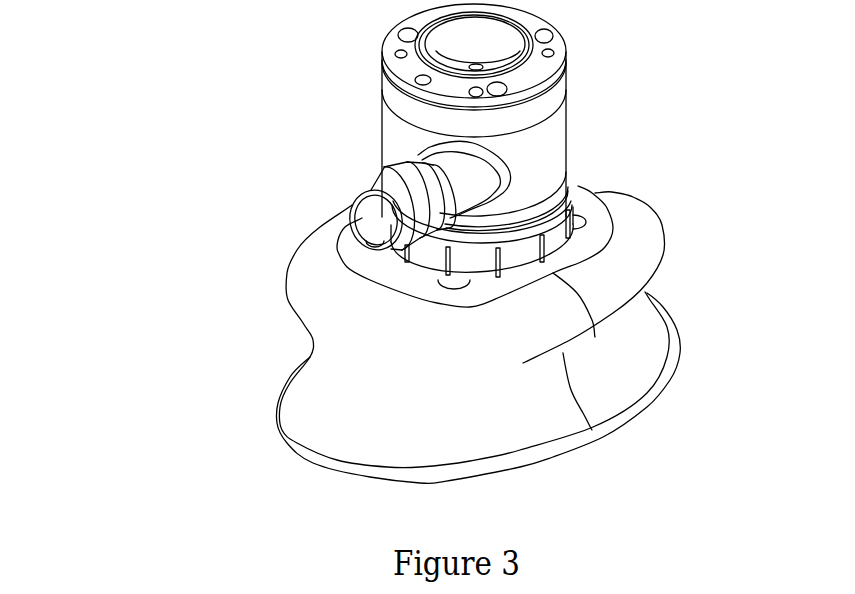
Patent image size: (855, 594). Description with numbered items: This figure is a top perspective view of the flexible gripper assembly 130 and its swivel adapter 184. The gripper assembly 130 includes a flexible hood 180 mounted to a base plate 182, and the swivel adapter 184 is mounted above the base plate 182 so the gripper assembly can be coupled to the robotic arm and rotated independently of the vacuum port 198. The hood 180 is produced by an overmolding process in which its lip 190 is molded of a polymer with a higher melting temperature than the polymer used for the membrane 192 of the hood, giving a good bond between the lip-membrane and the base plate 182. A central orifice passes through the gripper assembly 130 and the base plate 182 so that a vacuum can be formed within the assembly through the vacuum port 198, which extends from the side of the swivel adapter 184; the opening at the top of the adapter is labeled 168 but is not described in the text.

The gripping assembly 130 is at (147, 190).
The port opening 168 is at (477, 37).
The flexible hood 180 is at (683, 270).
The base plate 182 is at (598, 209).
The swivel adapter 184 is at (377, 128).
The lip 190 is at (640, 210).
The membrane 192 is at (357, 386).
The vacuum port 198 is at (378, 222).